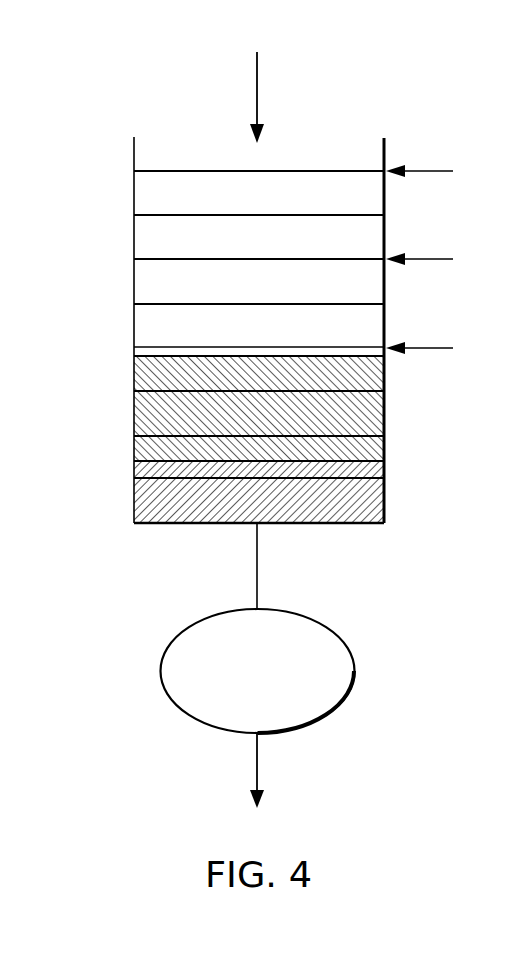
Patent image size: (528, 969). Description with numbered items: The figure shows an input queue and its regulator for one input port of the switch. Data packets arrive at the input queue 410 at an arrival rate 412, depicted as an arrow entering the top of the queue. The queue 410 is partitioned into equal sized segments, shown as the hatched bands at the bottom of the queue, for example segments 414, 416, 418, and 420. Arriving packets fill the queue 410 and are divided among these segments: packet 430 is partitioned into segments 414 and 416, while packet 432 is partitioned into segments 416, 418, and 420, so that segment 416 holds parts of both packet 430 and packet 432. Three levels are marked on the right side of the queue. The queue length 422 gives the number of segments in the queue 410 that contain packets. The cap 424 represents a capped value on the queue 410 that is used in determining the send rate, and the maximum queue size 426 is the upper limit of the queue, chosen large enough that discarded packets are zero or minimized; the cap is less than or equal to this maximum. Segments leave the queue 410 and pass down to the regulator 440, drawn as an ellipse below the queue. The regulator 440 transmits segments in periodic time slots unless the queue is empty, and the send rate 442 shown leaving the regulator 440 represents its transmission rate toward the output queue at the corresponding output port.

The input queue 410 is at (366, 114).
The arrival rate Λi 412 is at (259, 62).
The segment 414 is at (390, 480).
The segment 416 is at (390, 437).
The segment 418 is at (390, 392).
The segment 420 is at (390, 357).
The queue length Lij 422 is at (430, 347).
The cap Cij 424 is at (423, 259).
The maximum queue size Qimax 426 is at (423, 171).
The packet 430 is at (128, 462).
The packet 432 is at (128, 357).
The regulator 440 is at (333, 635).
The send rate μij 442 is at (258, 763).